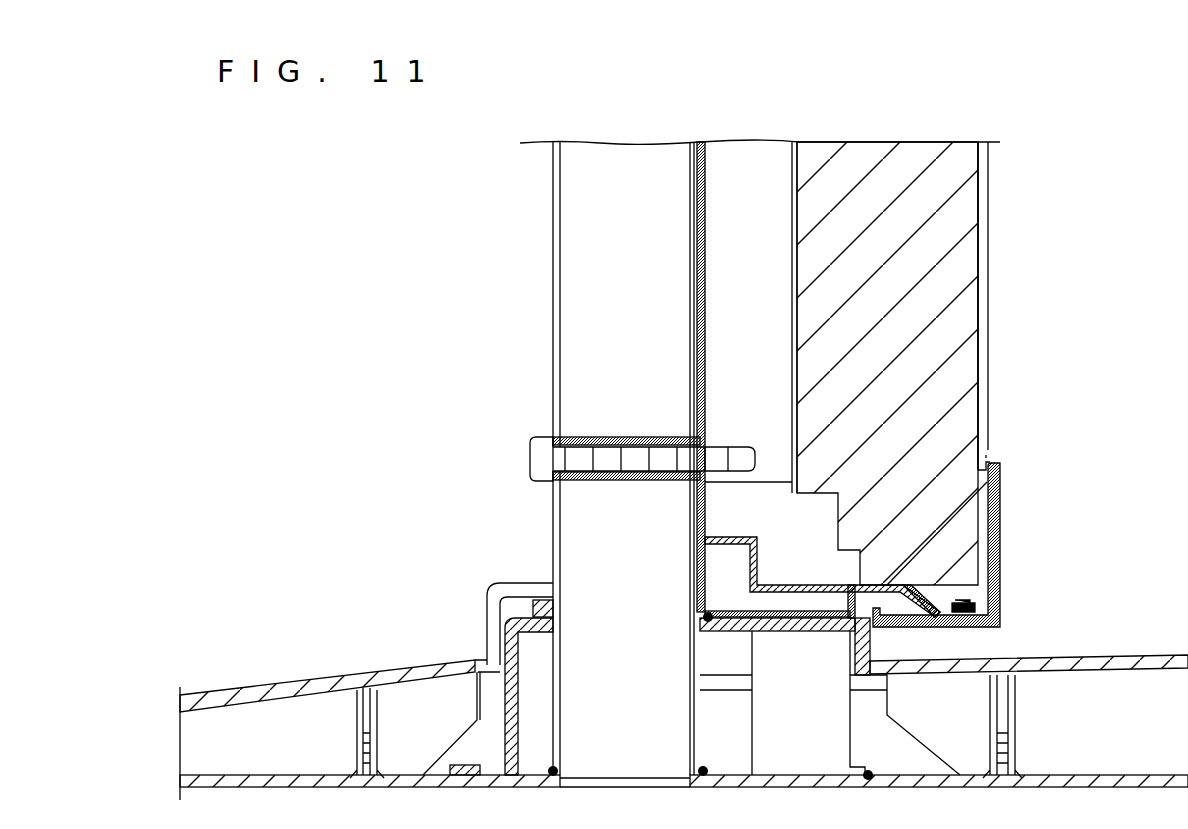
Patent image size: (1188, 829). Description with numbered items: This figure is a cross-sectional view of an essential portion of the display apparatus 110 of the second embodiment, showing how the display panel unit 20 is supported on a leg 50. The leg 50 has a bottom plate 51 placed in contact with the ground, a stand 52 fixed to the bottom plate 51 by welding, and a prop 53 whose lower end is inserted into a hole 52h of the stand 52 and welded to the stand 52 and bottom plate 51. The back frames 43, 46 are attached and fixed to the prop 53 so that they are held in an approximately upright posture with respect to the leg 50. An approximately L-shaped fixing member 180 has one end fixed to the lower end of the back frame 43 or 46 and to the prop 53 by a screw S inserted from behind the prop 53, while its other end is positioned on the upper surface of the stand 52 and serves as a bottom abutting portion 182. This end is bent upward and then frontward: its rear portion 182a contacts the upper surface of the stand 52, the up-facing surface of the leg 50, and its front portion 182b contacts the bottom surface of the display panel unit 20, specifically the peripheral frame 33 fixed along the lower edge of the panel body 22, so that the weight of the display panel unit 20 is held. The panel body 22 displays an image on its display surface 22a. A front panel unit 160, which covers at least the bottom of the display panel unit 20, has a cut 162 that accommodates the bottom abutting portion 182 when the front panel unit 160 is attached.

The display apparatus 110 is at (797, 97).
The back frame 46 is at (751, 298).
The back frame 43 is at (722, 152).
The display panel unit 20 is at (916, 140).
The display surface 22a is at (988, 210).
The panel body 22 is at (930, 380).
The prop 53 is at (557, 203).
The fixing member 180 is at (707, 375).
The bottom abutting portion 182 is at (878, 585).
The rear portion 182a is at (803, 628).
The front portion 182b is at (897, 583).
The front panel unit 160 is at (1002, 510).
The cut 162 is at (905, 598).
The screw S is at (545, 450).
The peripheral frame 33 is at (810, 583).
The stand 52 is at (800, 620).
The hole 52h is at (553, 630).
The leg 50 is at (404, 652).
The bottom plate 51 is at (805, 787).